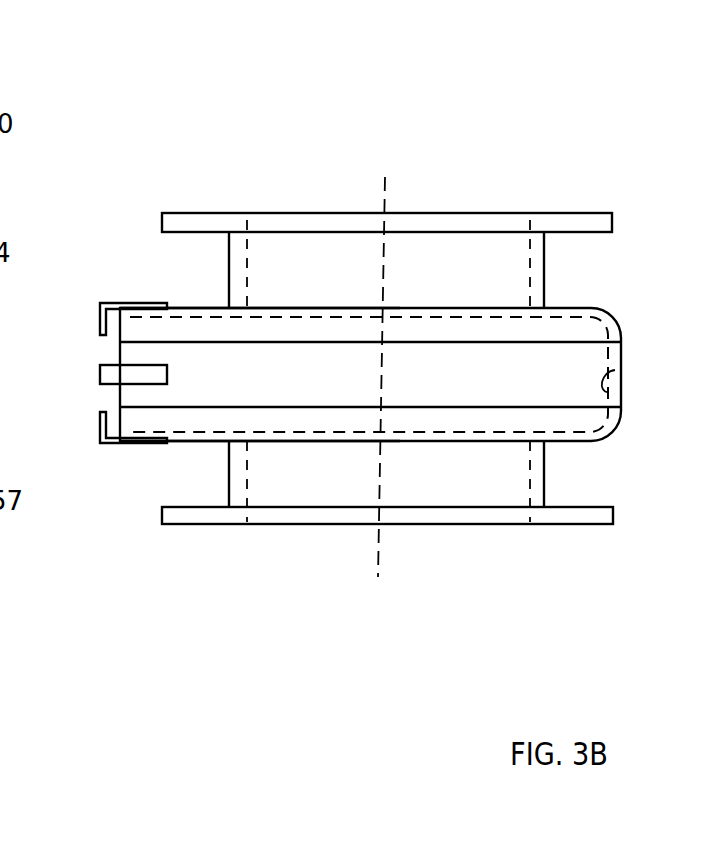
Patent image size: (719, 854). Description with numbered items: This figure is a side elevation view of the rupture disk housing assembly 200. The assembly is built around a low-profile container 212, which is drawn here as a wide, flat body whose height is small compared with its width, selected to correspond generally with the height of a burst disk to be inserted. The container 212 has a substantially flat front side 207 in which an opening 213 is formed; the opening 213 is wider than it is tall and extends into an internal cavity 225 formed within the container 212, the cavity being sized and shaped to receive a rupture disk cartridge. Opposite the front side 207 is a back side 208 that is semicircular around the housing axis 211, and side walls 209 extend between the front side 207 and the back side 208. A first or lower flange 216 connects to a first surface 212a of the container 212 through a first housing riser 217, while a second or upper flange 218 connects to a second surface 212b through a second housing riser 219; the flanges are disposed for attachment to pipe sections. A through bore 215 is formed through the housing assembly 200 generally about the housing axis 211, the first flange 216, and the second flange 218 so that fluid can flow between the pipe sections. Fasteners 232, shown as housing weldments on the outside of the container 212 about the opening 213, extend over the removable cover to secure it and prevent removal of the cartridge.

The housing assembly 200 is at (418, 95).
The front side 207 is at (110, 342).
The back side 208 is at (622, 392).
The side walls 209 is at (490, 385).
The housing axis 211 is at (387, 178).
The container 212 is at (463, 451).
The first surface 212a is at (195, 445).
The second surface 212b is at (192, 306).
The opening 213 is at (104, 318).
The through bore 215 is at (517, 232).
The first flange 216 is at (578, 536).
The first housing riser 217 is at (548, 468).
The second flange 218 is at (618, 212).
The second housing riser 219 is at (548, 268).
The internal cavity 225 is at (622, 388).
The fasteners 232 is at (100, 445).